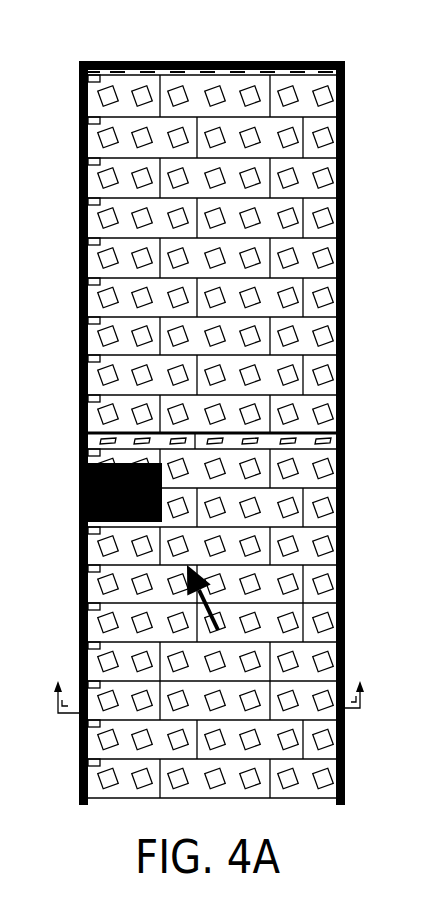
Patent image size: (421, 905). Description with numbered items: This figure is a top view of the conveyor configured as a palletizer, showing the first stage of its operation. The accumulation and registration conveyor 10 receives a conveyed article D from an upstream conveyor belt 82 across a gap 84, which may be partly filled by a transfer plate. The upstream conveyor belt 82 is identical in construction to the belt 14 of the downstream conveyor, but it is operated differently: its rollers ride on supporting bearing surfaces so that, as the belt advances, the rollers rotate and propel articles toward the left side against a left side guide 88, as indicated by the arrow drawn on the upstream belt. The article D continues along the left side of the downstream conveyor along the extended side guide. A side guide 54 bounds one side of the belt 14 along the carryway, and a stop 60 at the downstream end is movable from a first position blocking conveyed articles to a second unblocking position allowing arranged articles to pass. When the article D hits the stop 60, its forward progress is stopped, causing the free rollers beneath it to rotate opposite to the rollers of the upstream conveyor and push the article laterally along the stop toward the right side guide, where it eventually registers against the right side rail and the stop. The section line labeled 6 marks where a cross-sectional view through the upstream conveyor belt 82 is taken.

The accumulation and registration conveyor 10 is at (217, 420).
The belt 14 is at (346, 318).
The side guide 54 is at (346, 222).
The stop 60 is at (232, 61).
The upstream conveyor belt 82 is at (346, 553).
The gap 84 is at (346, 436).
The left side guide 88 is at (212, 254).
The conveyed article D is at (80, 487).
The section line 6- 6 is at (209, 712).